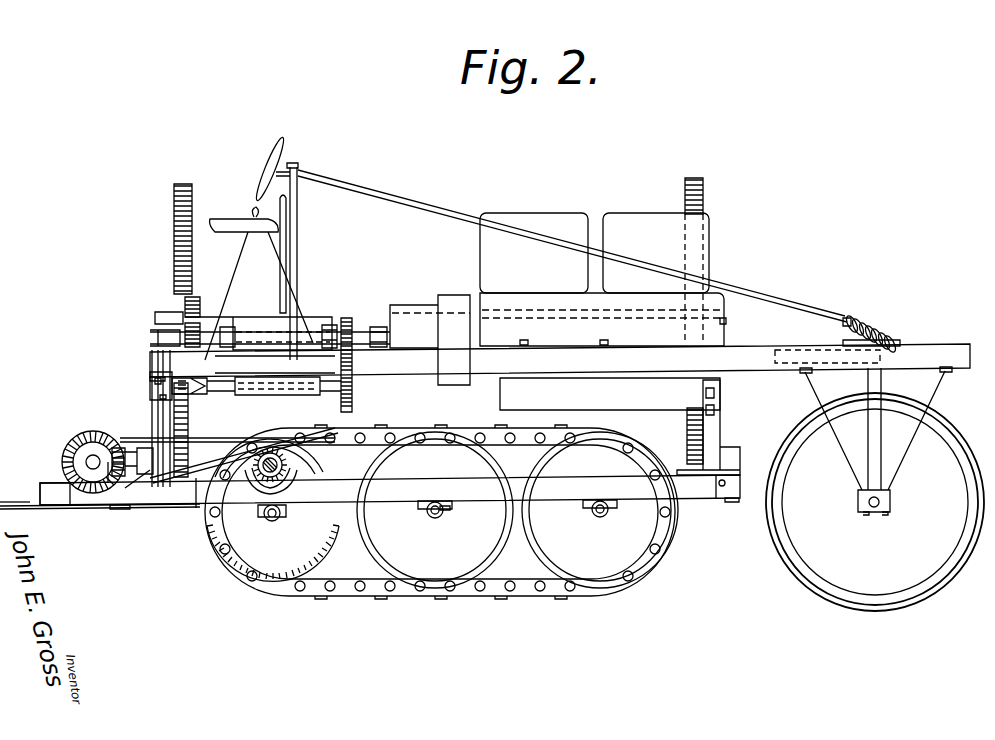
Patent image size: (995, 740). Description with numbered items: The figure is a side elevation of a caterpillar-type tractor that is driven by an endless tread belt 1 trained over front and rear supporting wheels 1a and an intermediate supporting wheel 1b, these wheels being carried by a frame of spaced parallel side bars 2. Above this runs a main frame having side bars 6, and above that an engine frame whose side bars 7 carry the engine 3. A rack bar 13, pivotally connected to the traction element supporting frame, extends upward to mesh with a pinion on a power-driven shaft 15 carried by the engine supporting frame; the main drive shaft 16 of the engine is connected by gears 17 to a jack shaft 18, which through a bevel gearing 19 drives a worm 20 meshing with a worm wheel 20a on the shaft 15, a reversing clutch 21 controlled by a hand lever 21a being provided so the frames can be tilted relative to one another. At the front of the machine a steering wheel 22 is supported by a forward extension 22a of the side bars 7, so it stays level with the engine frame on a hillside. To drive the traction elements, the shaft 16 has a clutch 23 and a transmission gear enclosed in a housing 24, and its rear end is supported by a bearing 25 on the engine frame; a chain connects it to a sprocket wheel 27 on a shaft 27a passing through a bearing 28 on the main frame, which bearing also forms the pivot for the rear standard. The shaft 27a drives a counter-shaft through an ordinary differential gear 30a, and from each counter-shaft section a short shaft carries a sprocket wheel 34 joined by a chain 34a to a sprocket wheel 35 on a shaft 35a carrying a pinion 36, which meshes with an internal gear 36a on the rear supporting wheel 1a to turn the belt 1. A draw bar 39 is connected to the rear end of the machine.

The endless tread belt 1 is at (368, 586).
The front and rear supporting wheel 1a is at (228, 578).
The intermediate supporting wheel 1b is at (430, 582).
The side bar 2 is at (497, 492).
The engine 3 is at (628, 226).
The side bar 6 is at (52, 492).
The side bar 7 is at (622, 372).
The rack bar 13 is at (172, 218).
The power-driven shaft 15 is at (247, 320).
The main drive shaft 16 is at (363, 335).
The gears 17 is at (352, 380).
The jack shaft 18 is at (242, 395).
The bevel gearing 19 is at (200, 392).
The worm 20 is at (198, 317).
The worm wheel 20a is at (200, 297).
The reversing clutch 21 is at (160, 385).
The hand lever 21a is at (258, 312).
The steering wheel 22 is at (875, 502).
The forward extension 22a is at (940, 350).
The clutch 23 is at (422, 320).
The housing 24 is at (315, 322).
The bearing 25 is at (156, 338).
The sprocket wheel 27 is at (192, 452).
The shaft 27a is at (185, 468).
The bearing 28 is at (143, 450).
The differential gear 30a is at (78, 432).
The sprocket wheel 34 is at (108, 484).
The chain 34a is at (197, 490).
The sprocket wheel 35 is at (290, 490).
The shaft 35a is at (268, 482).
The pinion 36 is at (300, 440).
The internal gear 36a is at (210, 552).
The draw bar 39 is at (0, 507).